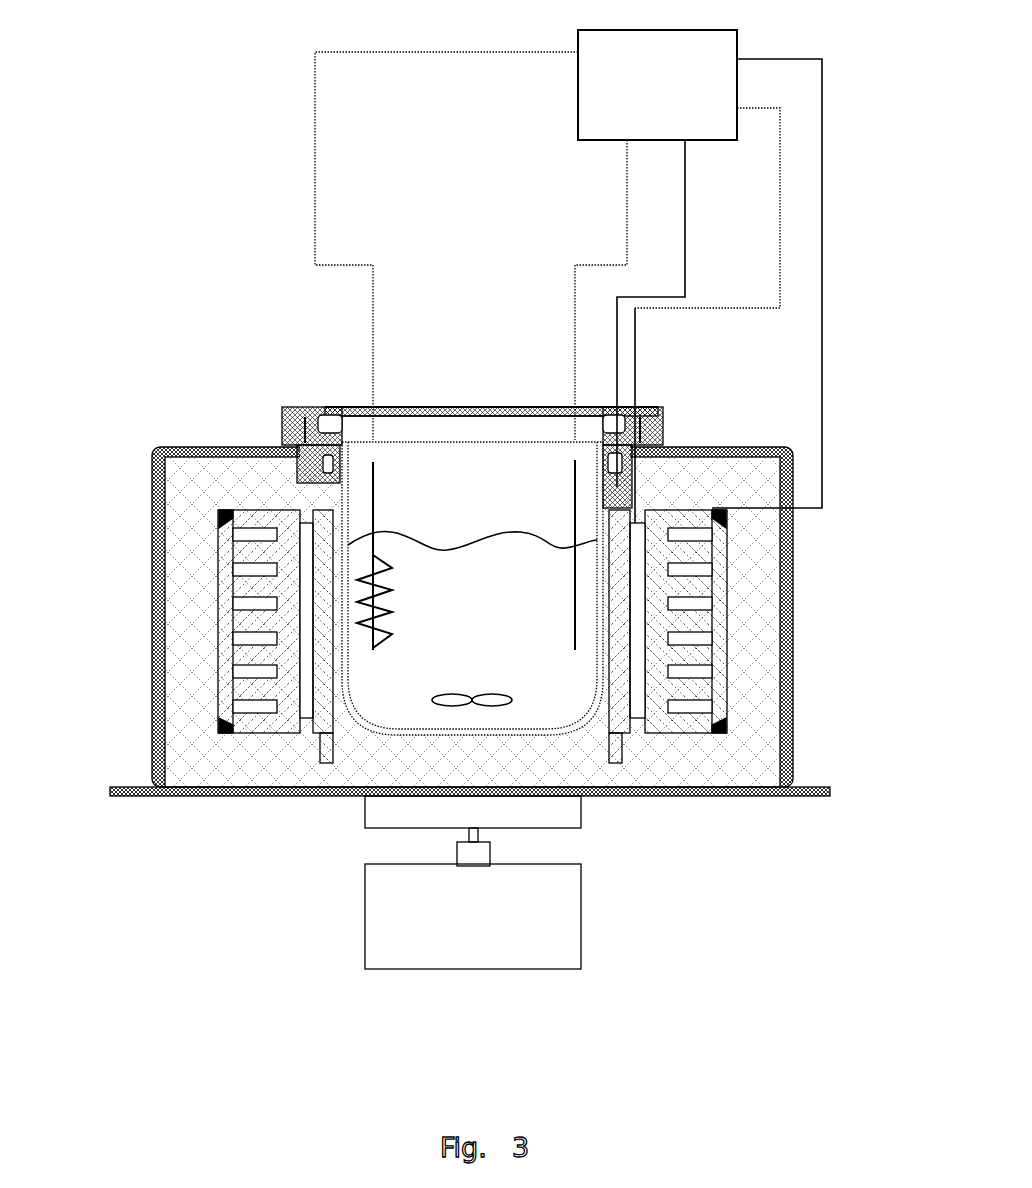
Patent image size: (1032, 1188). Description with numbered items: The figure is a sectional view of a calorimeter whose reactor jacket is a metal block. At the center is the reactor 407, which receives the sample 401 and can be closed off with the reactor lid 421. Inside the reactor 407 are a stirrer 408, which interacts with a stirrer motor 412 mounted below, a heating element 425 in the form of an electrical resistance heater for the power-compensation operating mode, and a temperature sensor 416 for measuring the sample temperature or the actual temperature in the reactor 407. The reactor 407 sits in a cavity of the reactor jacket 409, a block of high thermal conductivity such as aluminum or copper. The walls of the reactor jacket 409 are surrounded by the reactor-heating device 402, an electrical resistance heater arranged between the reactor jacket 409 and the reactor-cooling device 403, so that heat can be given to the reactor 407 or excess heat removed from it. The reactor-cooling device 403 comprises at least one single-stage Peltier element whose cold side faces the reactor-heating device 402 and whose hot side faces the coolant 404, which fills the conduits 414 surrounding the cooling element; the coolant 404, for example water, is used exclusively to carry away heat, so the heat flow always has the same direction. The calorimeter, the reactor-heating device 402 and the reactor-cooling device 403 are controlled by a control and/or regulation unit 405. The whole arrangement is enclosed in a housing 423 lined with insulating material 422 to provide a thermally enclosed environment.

The sample 401 is at (472, 588).
The reactor-heating device 402 is at (377, 621).
The reactor-cooling device 403 is at (606, 620).
The coolant 404 is at (560, 612).
The control and/or regulation unit 405 is at (547, 276).
The reactor 407 is at (543, 482).
The stirrer 408 is at (583, 876).
The reactor jacket 409 is at (451, 784).
The stirrer motor 412 is at (496, 927).
The conduits 414 is at (819, 293).
The temperature sensor 416 is at (472, 437).
The reactor lid 421 is at (434, 406).
The insulating material 422 is at (404, 622).
The housing 423 is at (410, 617).
The heating element 425 is at (347, 485).